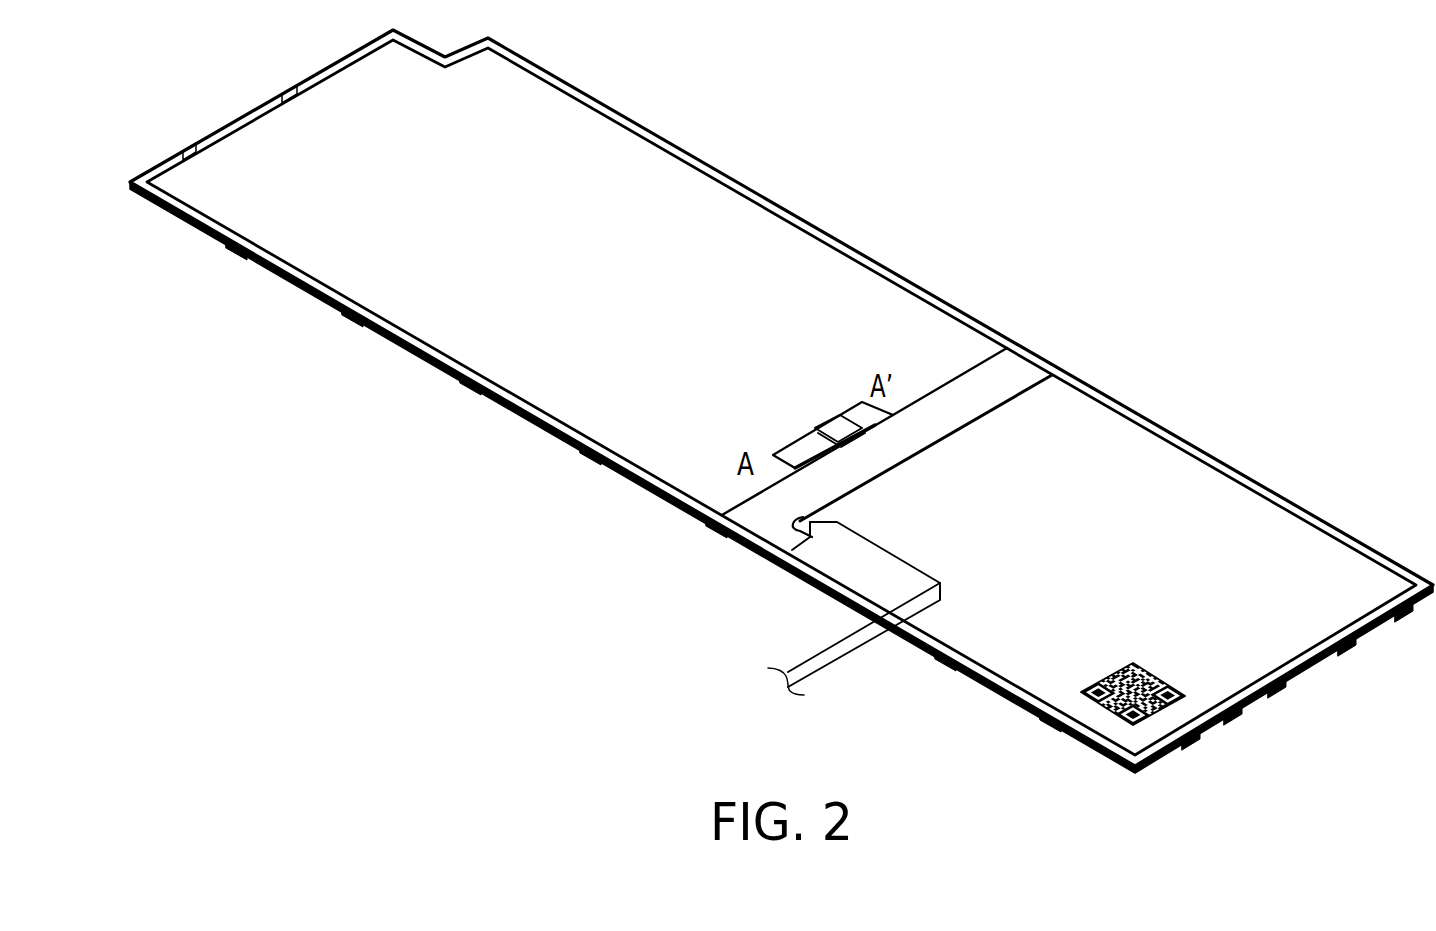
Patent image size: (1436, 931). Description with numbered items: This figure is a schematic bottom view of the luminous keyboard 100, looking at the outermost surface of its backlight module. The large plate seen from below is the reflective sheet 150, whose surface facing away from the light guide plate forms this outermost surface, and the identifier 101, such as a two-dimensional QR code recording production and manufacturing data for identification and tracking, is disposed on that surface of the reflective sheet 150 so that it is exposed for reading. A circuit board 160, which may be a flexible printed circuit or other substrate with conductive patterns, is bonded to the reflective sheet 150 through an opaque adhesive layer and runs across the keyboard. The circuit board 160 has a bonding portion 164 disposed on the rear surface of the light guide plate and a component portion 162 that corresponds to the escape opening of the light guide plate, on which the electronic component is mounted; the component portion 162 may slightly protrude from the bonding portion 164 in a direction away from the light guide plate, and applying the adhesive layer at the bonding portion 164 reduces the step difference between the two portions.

The luminous keyboard 100 is at (1415, 781).
The identifier 101 is at (1087, 698).
The reflective sheet 150 is at (1237, 507).
The circuit board 160 is at (1008, 377).
The component portion 162 is at (832, 420).
The bonding portion 164 is at (790, 447).